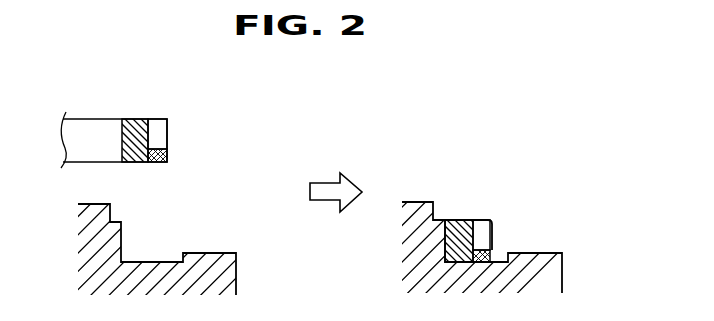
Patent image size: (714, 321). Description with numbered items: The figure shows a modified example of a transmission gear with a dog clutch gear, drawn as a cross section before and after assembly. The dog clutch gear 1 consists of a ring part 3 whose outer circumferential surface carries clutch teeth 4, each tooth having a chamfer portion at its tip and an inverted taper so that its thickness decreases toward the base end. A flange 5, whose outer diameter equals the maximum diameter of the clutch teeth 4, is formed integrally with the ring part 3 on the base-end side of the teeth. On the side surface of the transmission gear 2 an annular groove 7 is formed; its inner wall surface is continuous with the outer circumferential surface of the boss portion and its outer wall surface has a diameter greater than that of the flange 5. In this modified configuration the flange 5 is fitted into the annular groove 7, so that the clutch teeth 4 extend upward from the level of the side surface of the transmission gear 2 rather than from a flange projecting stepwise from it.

The dog clutch gear 1 is at (104, 101).
The transmission gear 2 is at (241, 269).
The ring part 3 is at (128, 120).
The clutch teeth 4 is at (157, 130).
The flange 5 is at (160, 158).
The annular groove 7 is at (156, 247).